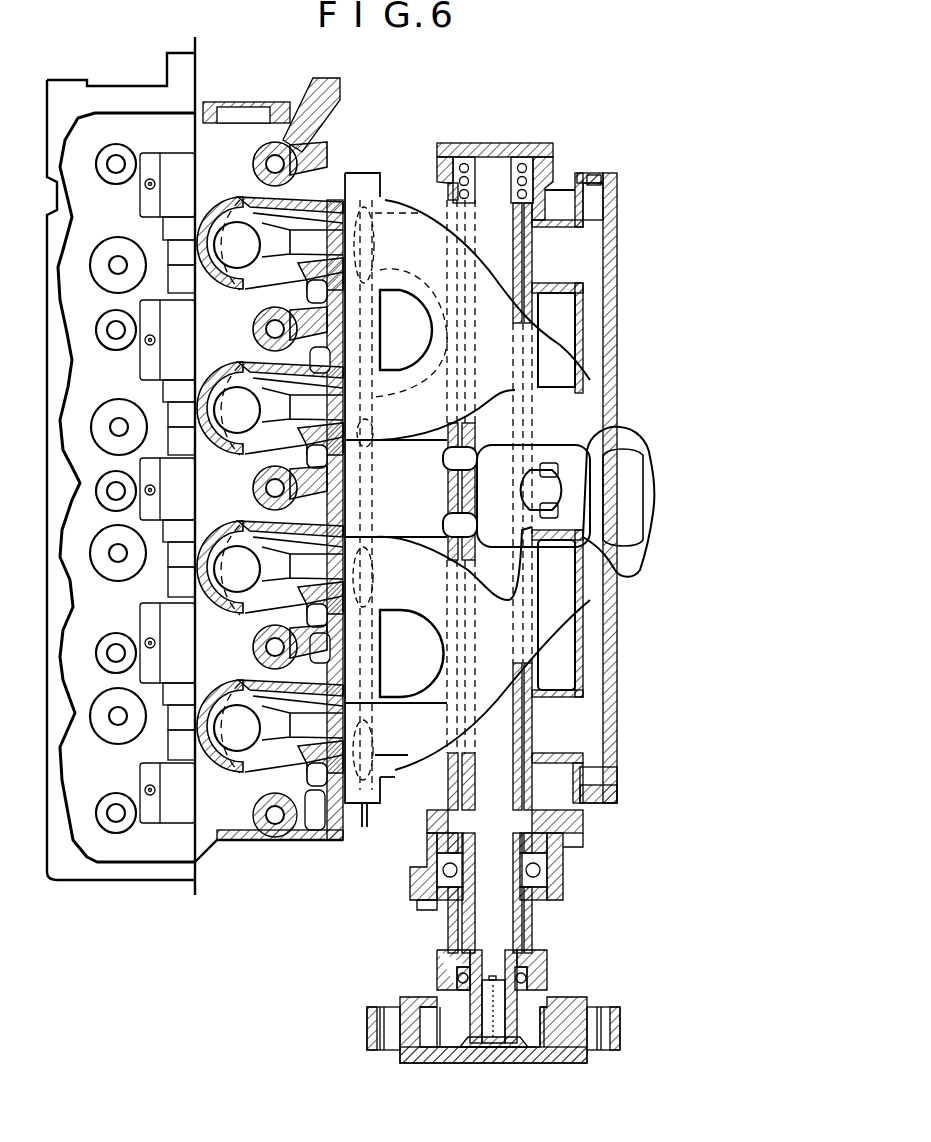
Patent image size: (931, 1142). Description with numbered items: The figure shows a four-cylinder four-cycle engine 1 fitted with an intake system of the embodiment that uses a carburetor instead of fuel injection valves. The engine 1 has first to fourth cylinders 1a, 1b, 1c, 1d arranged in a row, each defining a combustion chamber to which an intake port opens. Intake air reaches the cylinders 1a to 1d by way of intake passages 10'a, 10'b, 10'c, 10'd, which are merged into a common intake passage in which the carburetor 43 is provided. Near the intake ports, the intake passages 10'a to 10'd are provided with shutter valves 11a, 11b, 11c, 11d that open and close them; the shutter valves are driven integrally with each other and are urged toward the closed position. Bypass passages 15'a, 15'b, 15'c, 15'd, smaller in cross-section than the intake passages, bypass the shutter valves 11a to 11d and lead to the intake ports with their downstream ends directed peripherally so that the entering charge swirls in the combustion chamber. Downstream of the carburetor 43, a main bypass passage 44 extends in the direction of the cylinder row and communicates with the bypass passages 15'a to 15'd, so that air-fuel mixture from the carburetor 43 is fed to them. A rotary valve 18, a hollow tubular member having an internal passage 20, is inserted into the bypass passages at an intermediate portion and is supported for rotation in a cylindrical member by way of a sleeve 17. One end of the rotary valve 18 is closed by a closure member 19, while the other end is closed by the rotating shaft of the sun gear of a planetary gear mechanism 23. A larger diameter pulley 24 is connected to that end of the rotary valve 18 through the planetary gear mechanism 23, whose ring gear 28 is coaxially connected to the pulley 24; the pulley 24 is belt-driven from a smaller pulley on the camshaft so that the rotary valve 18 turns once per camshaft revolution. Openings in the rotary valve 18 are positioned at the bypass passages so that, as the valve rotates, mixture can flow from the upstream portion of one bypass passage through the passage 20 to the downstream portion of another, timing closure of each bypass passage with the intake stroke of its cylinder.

The engine 1 is at (120, 66).
The first cylinder 1a is at (130, 757).
The second cylinder 1b is at (138, 583).
The third cylinder 1c is at (137, 390).
The fourth cylinder 1d is at (137, 232).
The intake passage 10'a is at (407, 784).
The intake passage 10'b is at (482, 648).
The intake passage 10'c is at (406, 330).
The intake passage 10'd is at (482, 288).
The shutter valve 11a is at (372, 803).
The shutter valve 11b is at (370, 547).
The shutter valve 11c is at (370, 447).
The shutter valve 11d is at (362, 205).
The bypass passage 15'a is at (600, 756).
The bypass passage 15'b is at (602, 613).
The bypass passage 15'c is at (601, 345).
The bypass passage 15'd is at (604, 210).
The sleeve 17 is at (585, 833).
The rotary valve 18 is at (532, 912).
The closure member 19 is at (528, 143).
The passage 20 is at (507, 788).
The planetary gear mechanism 23 is at (400, 1068).
The larger diameter pulley 24 is at (620, 1026).
The ring gear 28 is at (566, 1056).
The carburetor 43 is at (663, 490).
The main bypass passage 44 is at (595, 332).